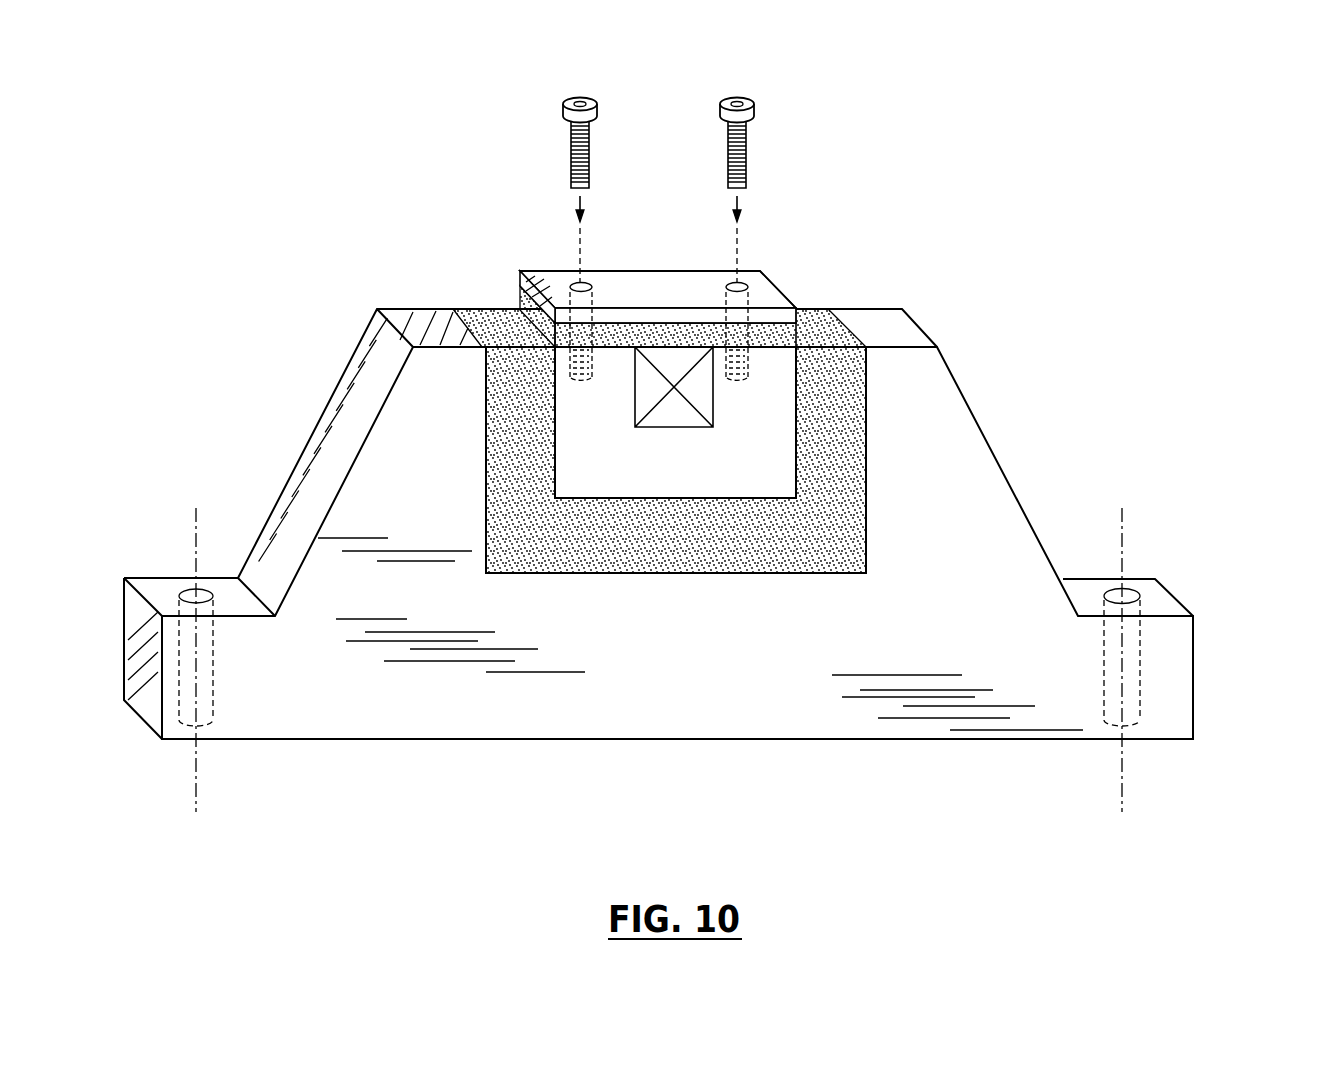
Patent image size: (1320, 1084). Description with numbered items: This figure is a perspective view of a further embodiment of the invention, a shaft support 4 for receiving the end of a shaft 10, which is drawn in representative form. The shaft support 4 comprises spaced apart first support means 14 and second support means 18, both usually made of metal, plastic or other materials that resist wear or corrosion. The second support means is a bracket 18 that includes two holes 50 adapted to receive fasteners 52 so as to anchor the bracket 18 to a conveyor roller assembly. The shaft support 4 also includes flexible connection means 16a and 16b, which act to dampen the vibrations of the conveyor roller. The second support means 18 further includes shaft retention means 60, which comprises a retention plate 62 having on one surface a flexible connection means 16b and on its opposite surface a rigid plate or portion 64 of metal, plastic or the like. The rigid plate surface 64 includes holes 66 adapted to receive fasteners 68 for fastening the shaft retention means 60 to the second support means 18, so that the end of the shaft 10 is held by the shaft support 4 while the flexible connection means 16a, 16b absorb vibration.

The shaft support 4 is at (707, 433).
The shaft 10 is at (684, 362).
The first support means 14 is at (637, 461).
The flexible connection means 16a is at (850, 435).
The flexible connection means 16b is at (770, 330).
The second support means 18 is at (640, 666).
The holes 50 is at (213, 700).
The fasteners 52 is at (197, 562).
The shaft retention means 60 is at (623, 236).
The retention plate 62 is at (609, 287).
The rigid plate or portion 64 is at (712, 285).
The holes 66 is at (566, 287).
The fasteners 68 is at (582, 94).